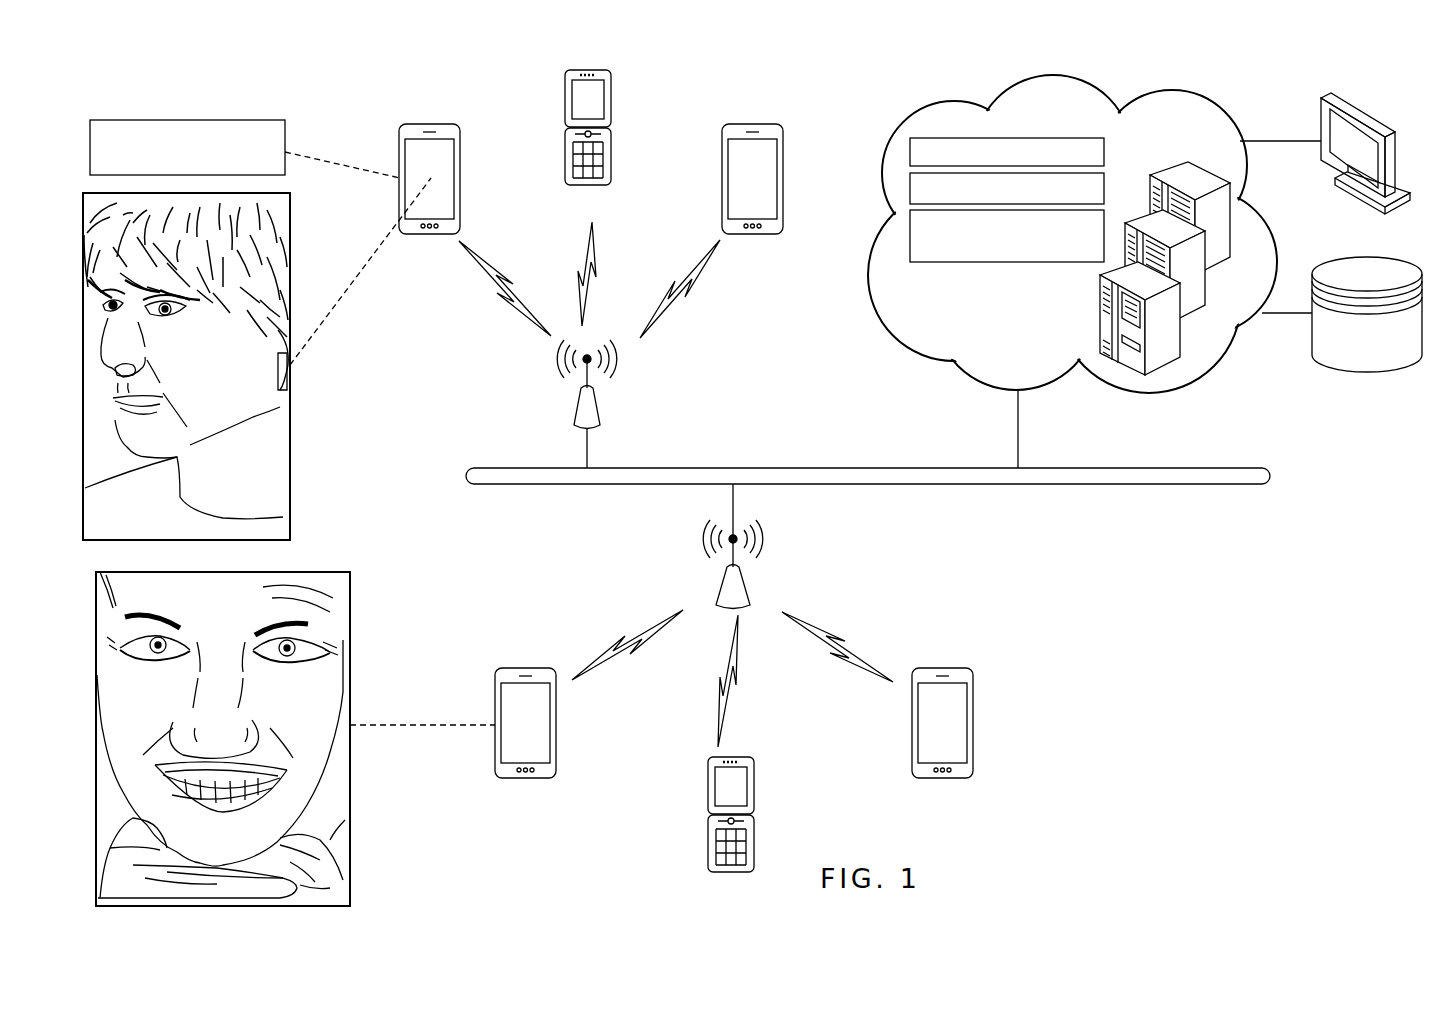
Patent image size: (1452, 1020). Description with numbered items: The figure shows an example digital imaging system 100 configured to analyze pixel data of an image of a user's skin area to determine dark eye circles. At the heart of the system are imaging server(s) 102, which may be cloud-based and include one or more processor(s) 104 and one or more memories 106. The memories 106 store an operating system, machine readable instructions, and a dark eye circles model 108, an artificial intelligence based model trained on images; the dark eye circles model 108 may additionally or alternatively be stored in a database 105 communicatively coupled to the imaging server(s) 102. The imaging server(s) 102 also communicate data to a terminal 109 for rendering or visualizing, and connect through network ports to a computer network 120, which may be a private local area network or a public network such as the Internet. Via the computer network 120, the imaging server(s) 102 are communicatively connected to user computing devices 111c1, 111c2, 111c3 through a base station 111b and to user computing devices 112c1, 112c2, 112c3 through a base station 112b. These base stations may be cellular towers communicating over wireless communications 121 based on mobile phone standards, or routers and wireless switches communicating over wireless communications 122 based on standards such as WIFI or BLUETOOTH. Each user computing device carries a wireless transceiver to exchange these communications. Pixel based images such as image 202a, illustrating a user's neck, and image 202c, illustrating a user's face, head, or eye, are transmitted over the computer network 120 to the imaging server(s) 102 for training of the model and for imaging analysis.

The digital imaging system 100 is at (283, 84).
The imaging server(s) 102 is at (1180, 90).
The processor(s) 104 is at (1060, 137).
The database 105 is at (1384, 260).
The memories 106 is at (882, 186).
The dark eye circles model 108 is at (1005, 262).
The terminal 109 is at (1365, 110).
The base station 111b is at (597, 402).
The user computing device 111c1 is at (460, 180).
The user computing device 111c2 is at (611, 100).
The user computing device 111c3 is at (722, 180).
The base station 112b is at (722, 583).
The user computing device 112c1 is at (556, 730).
The user computing device 112c2 is at (707, 800).
The user computing device 112c3 is at (912, 726).
The computer network 120 is at (1218, 468).
The wireless communications 121 is at (592, 230).
The wireless communications 122 is at (515, 313).
The image 202a is at (285, 370).
The image 202c is at (352, 640).